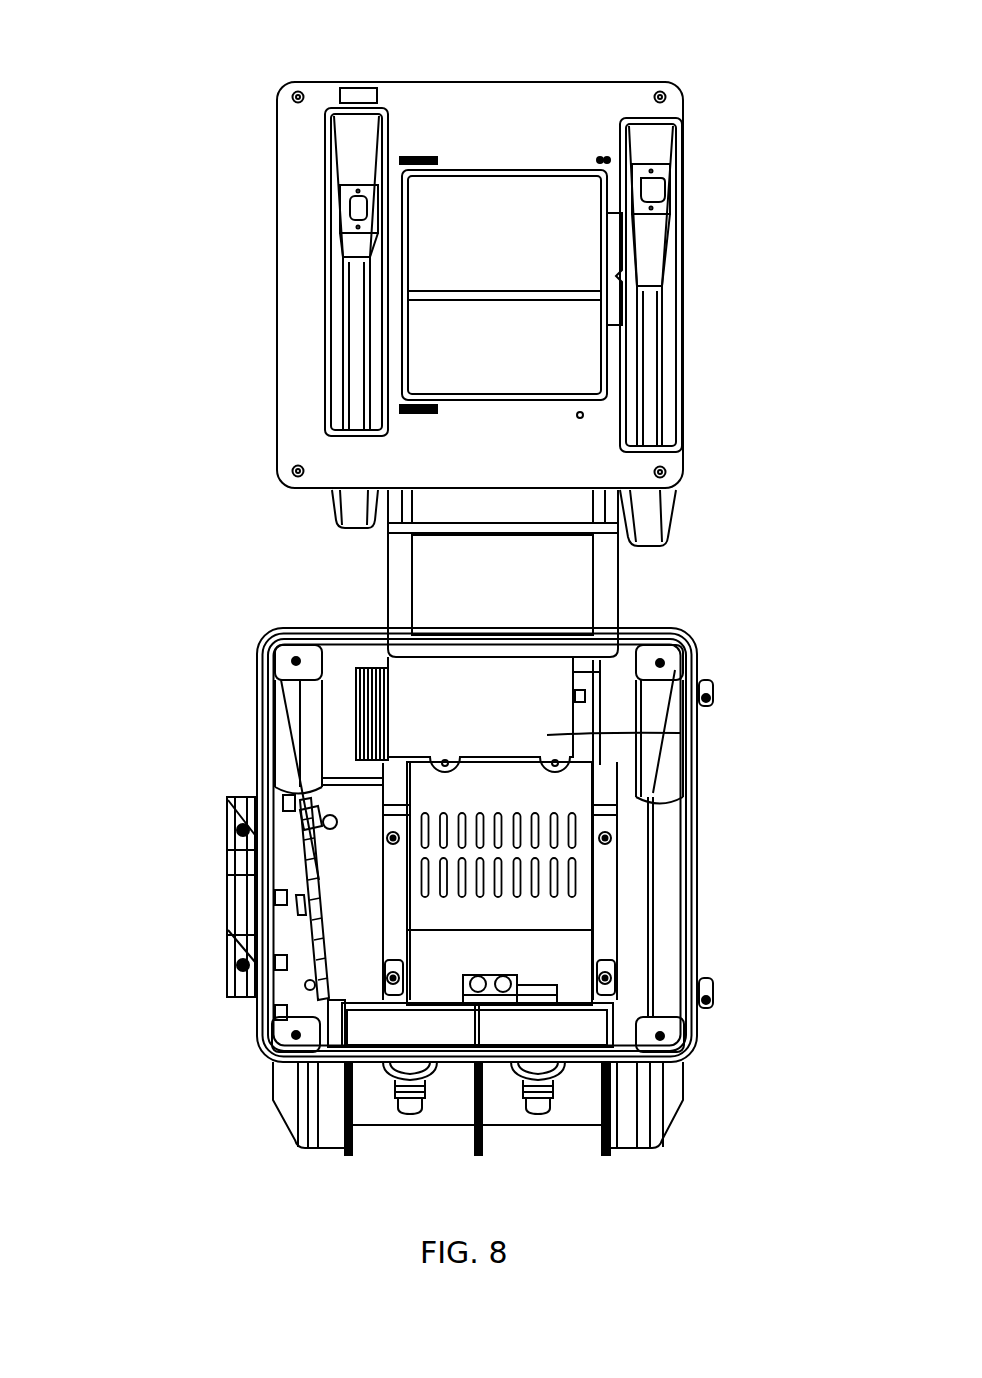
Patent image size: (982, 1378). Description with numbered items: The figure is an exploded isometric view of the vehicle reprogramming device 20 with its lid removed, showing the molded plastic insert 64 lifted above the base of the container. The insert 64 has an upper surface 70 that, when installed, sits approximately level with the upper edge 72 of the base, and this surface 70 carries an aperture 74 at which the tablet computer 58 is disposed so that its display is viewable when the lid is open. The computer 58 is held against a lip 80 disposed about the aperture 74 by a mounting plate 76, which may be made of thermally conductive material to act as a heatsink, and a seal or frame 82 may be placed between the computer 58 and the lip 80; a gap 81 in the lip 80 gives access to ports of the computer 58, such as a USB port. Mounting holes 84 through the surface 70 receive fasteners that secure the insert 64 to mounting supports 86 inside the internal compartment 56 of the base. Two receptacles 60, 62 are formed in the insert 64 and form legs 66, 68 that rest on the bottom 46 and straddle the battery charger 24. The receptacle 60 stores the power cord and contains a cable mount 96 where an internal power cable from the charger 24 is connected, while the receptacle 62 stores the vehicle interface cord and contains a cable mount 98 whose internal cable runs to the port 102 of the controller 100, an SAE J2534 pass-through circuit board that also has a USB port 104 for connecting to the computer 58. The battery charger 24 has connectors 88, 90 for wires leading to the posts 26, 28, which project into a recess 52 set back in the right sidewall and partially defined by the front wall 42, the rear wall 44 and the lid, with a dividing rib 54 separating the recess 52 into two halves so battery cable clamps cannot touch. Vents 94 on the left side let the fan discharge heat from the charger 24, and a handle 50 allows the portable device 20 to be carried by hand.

The vehicle reprogramming device 20 is at (78, 74).
The battery charger 24 is at (592, 900).
The post 26 is at (410, 1105).
The post 28 is at (538, 1105).
The front wall 42 is at (270, 1060).
The rear wall 44 is at (674, 990).
The bottom 46 is at (637, 850).
The handle 50 is at (232, 848).
The recess 52 is at (365, 1110).
The dividing rib 54 is at (475, 1135).
The internal compartment 56 is at (630, 938).
The tablet computer 58 is at (640, 640).
The receptacle 60 is at (662, 362).
The receptacle 62 is at (355, 330).
The insert 64 is at (277, 155).
The leg 66 is at (666, 512).
The leg 68 is at (335, 500).
The surface 70 is at (524, 459).
The upper edge 72 is at (265, 707).
The aperture 74 is at (410, 360).
The mounting plate 76 is at (553, 735).
The lip 80 is at (410, 235).
The gap 81 is at (612, 194).
The seal or frame 82 is at (430, 537).
The mounting holes 84 is at (298, 97).
The mounting supports 86 is at (288, 652).
The connector 88 is at (478, 976).
The connector 90 is at (505, 976).
The vents 94 is at (355, 705).
The cable mount 96 is at (662, 200).
The cable mount 98 is at (343, 212).
The controller 100 is at (312, 852).
The port 102 is at (318, 975).
The USB port 104 is at (300, 912).